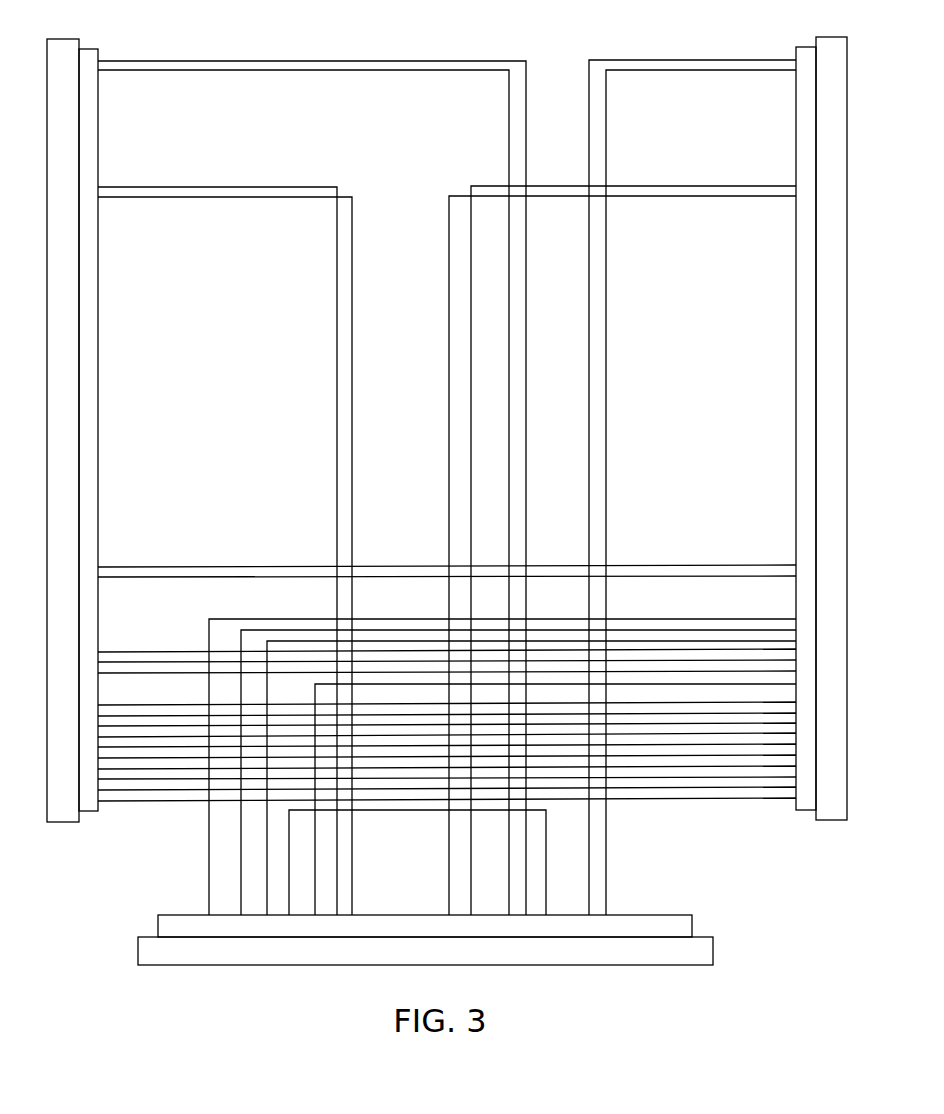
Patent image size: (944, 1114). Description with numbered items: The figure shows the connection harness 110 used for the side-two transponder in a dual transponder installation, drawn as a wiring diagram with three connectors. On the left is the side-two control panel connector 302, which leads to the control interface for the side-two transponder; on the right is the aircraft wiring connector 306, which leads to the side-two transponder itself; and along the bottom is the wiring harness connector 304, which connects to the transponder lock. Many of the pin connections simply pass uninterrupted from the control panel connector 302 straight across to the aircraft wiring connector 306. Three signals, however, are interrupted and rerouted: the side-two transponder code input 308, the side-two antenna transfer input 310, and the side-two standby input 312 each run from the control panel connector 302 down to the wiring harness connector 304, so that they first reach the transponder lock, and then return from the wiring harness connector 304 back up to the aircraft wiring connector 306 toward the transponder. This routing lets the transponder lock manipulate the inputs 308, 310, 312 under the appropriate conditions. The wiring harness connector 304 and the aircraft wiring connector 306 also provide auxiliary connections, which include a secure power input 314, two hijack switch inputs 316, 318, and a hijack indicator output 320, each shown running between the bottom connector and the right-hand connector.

The connection harness 110 is at (105, 914).
The side-2 control panel connector 302 is at (65, 823).
The wiring harness connector 304 is at (713, 952).
The aircraft wiring connector 306 is at (832, 822).
The side-2 transponder code input 308 is at (243, 198).
The side-2 antenna transfer input 310 is at (229, 60).
The side-2 standby input 312 is at (229, 71).
The secure power input 314 is at (625, 618).
The hijack switch input 316 is at (625, 628).
The hijack switch input 318 is at (677, 639).
The hijack indicator output 320 is at (733, 681).